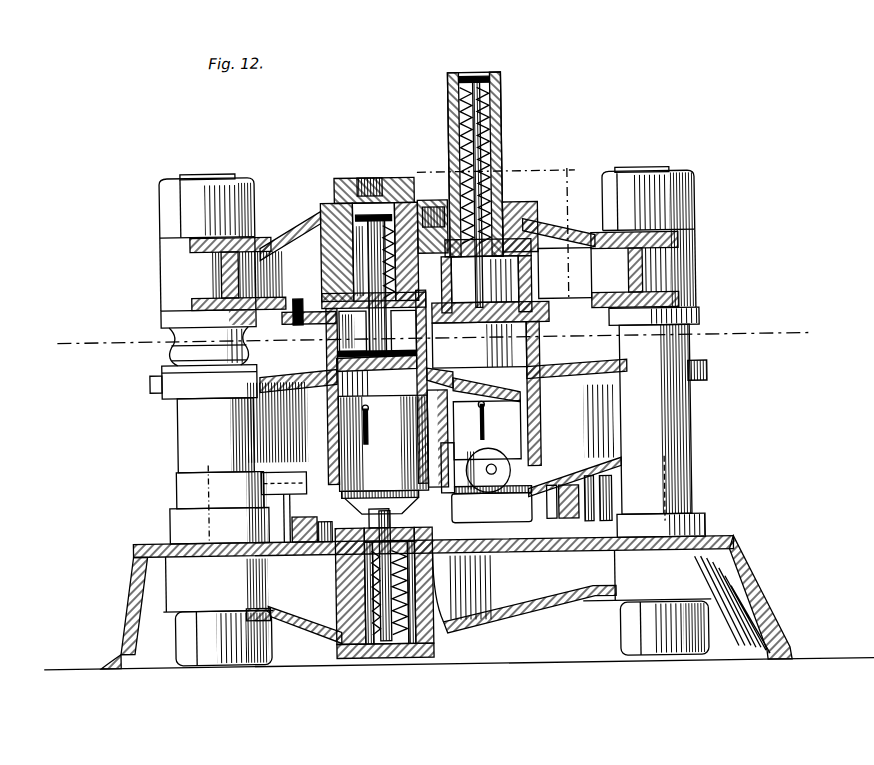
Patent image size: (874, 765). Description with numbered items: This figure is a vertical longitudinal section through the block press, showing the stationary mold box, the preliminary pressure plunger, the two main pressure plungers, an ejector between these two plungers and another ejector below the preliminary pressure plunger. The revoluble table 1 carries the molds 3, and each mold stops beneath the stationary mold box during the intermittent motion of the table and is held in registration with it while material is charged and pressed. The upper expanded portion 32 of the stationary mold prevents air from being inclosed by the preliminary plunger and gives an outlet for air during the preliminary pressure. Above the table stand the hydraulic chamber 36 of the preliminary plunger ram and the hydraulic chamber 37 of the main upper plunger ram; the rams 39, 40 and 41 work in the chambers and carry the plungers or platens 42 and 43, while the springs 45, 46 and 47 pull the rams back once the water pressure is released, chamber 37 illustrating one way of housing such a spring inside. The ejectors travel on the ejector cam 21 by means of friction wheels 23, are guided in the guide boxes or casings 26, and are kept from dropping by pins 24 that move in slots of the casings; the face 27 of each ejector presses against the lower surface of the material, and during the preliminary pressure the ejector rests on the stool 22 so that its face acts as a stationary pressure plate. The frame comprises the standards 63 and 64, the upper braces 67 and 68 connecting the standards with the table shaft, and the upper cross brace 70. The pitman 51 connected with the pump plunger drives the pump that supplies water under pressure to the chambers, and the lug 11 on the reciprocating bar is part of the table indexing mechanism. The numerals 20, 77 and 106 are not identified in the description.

The revoluble table 1 is at (363, 467).
The molds 3 is at (465, 367).
The lug or pin 11 is at (539, 596).
The lever 20 is at (530, 440).
The ejector cam 21 is at (445, 431).
The stool 22 is at (492, 505).
The friction wheels 23 is at (500, 493).
The pins 24 is at (612, 406).
The guide boxes or casings 26 is at (533, 400).
The face of the ejector 27 is at (429, 379).
The upper expanded portion of the stationary mold 32 is at (533, 335).
The hydraulic chamber of the preliminary plunger ram 36 is at (505, 130).
The hydraulic chamber of the main upper plunger ram 37 is at (366, 178).
The ram 39 is at (490, 162).
The ram 40 is at (345, 260).
The ram 41 is at (335, 596).
The plunger or platen 42 is at (538, 250).
The plunger or platen 43 is at (358, 387).
The spring 45 is at (458, 98).
The spring 46 is at (400, 180).
The spring 47 is at (333, 637).
The pitman 51 is at (577, 507).
The standard of the press 63 is at (184, 403).
The standard of the press 64 is at (689, 450).
The upper brace 67 is at (644, 281).
The upper brace 68 is at (223, 267).
The upper cross brace 70 is at (551, 252).
The section line 77 is at (429, 344).
The lug 106 is at (336, 563).